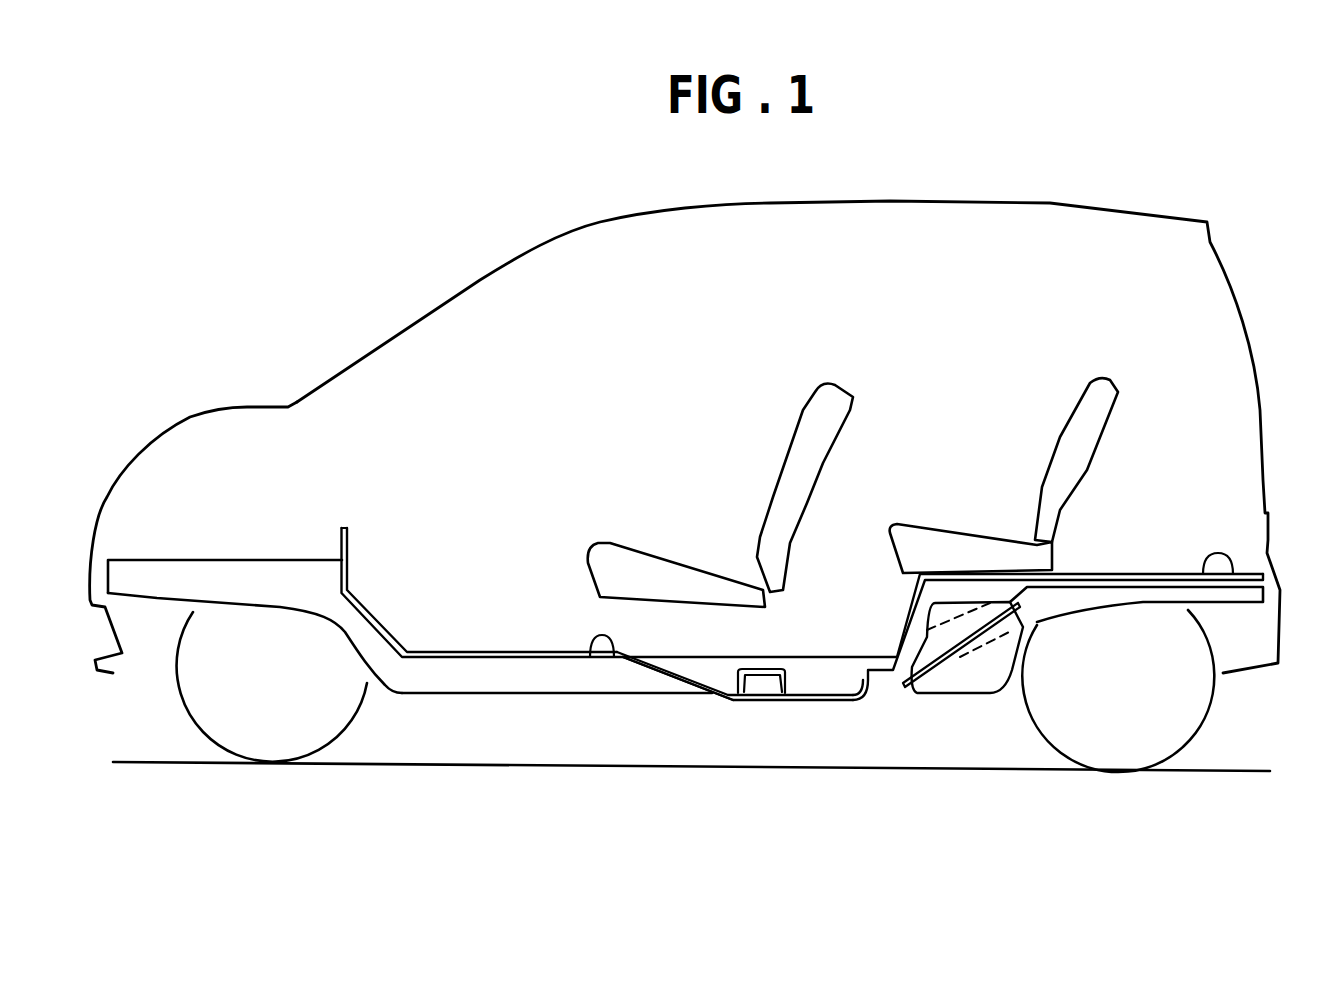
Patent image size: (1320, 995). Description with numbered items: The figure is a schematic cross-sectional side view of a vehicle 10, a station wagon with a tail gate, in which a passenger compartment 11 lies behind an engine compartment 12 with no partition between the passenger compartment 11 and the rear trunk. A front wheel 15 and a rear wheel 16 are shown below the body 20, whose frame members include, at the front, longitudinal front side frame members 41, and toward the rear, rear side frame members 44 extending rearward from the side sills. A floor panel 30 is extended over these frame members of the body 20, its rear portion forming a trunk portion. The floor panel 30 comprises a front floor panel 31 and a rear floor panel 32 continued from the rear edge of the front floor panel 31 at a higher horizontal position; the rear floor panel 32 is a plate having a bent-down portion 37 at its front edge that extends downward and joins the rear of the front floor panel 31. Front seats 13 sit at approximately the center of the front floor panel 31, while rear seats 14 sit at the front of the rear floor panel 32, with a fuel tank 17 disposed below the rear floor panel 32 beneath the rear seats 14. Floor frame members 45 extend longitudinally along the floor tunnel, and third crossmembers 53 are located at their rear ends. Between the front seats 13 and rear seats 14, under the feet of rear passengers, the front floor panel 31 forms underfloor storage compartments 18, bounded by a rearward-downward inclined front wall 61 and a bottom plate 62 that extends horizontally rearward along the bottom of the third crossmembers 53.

The vehicle 10 is at (165, 250).
The passenger compartment 11 is at (483, 430).
The engine compartment 12 is at (263, 470).
The front seats 13 is at (638, 553).
The rear seats 14 is at (953, 537).
The front wheel 15 is at (325, 727).
The rear wheel 16 is at (1093, 750).
The fuel tank 17 is at (972, 678).
The underfloor storage compartments 18 is at (818, 672).
The body 20 is at (155, 600).
The floor panel 30 is at (548, 660).
The front floor panel 31 is at (613, 653).
The rear floor panel 32 is at (1237, 570).
The bent-down portion 37 is at (902, 627).
The front side frame members 41 is at (263, 590).
The rear side frame members 44 is at (1145, 598).
The floor frame members 45 is at (475, 682).
The third crossmembers 53 is at (757, 680).
The front wall of the underfloor storage compartments 61 is at (672, 680).
The bottom plate of the underfloor storage compartments 62 is at (848, 690).